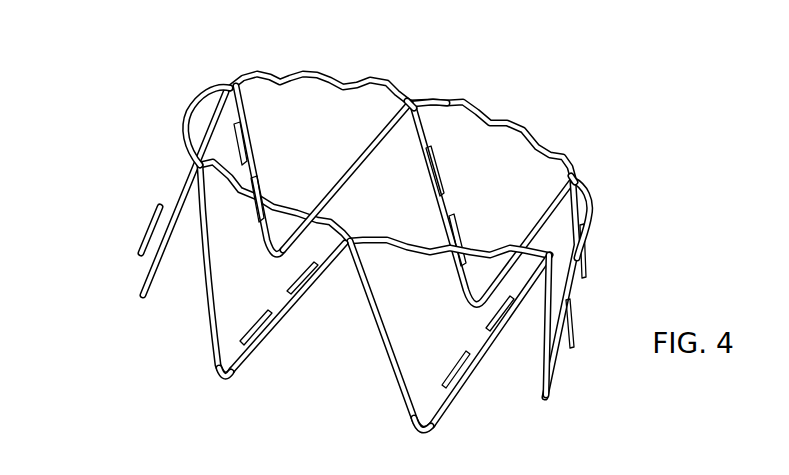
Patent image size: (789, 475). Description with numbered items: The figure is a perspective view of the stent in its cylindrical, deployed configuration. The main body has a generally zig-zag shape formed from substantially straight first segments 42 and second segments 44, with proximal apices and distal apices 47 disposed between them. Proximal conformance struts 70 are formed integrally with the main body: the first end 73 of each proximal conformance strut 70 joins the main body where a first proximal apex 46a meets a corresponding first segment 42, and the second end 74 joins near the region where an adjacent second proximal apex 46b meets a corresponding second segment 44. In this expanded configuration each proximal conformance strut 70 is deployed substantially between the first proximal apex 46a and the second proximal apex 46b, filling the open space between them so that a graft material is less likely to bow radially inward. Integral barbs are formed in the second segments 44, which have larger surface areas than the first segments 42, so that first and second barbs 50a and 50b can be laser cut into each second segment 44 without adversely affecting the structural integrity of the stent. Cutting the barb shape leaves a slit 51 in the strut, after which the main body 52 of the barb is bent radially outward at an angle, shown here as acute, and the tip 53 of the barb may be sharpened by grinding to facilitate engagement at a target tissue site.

The proximal conformance strut 70 is at (311, 56).
The first proximal apex 46a is at (228, 86).
The second proximal apex 46b is at (412, 98).
The second end 74 is at (435, 100).
The first end 73 is at (577, 174).
The second segment 44 is at (252, 168).
The first segment 42 is at (338, 182).
The distal apex 47 is at (220, 378).
The first barb 50a is at (320, 307).
The second barb 50b is at (280, 345).
The slit 51 is at (429, 189).
The main body of the barb 52 is at (150, 238).
The tip 53 is at (142, 251).